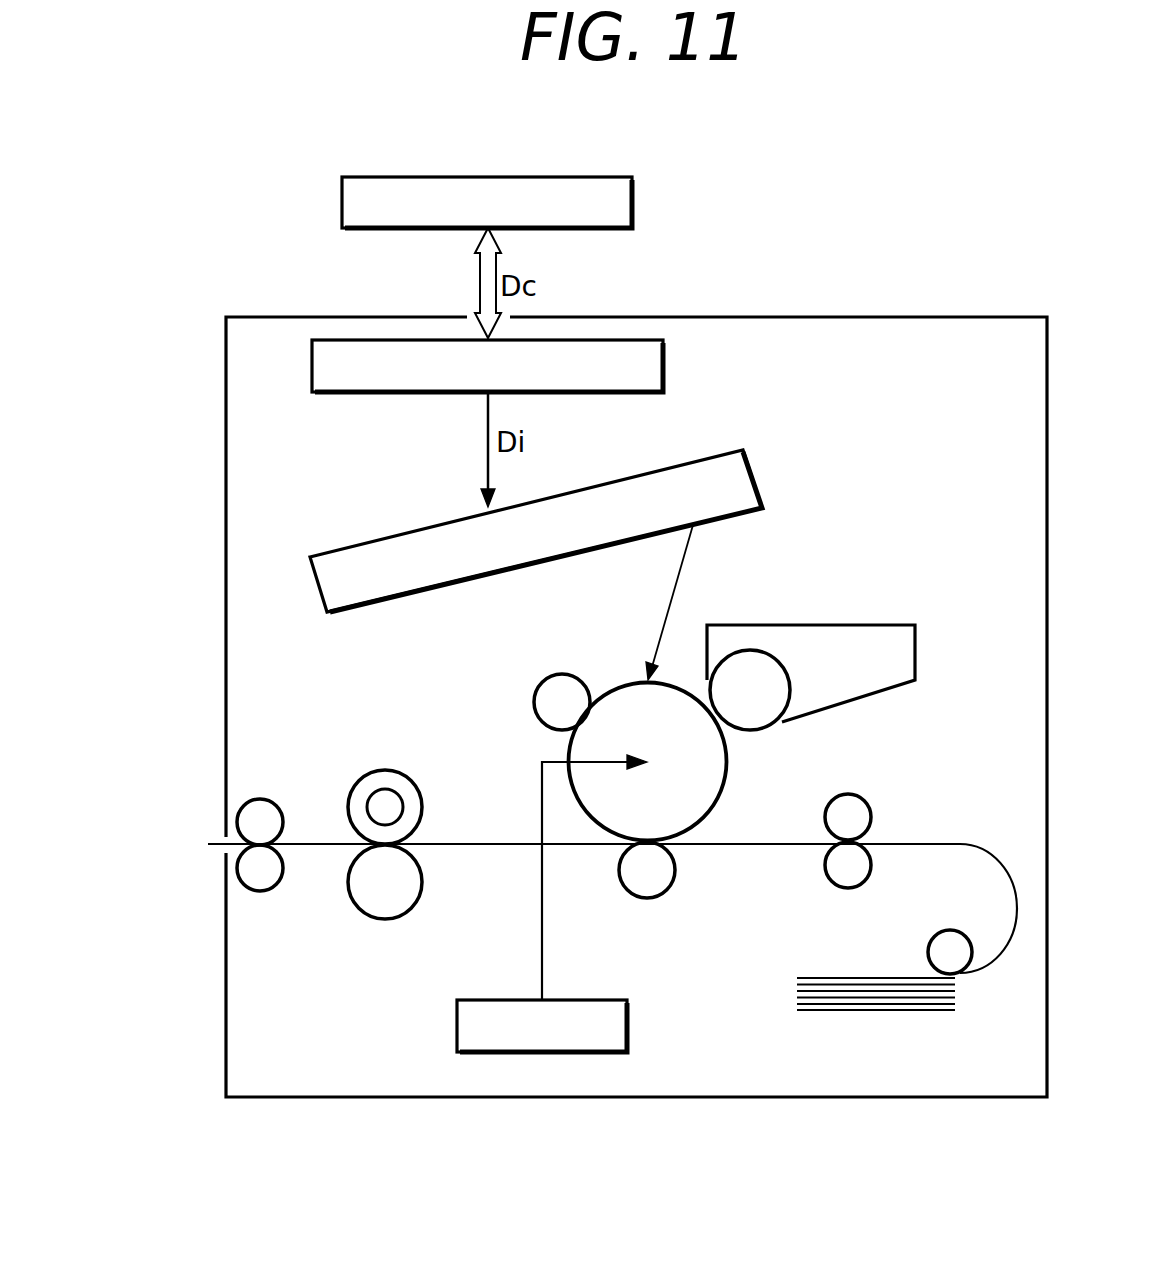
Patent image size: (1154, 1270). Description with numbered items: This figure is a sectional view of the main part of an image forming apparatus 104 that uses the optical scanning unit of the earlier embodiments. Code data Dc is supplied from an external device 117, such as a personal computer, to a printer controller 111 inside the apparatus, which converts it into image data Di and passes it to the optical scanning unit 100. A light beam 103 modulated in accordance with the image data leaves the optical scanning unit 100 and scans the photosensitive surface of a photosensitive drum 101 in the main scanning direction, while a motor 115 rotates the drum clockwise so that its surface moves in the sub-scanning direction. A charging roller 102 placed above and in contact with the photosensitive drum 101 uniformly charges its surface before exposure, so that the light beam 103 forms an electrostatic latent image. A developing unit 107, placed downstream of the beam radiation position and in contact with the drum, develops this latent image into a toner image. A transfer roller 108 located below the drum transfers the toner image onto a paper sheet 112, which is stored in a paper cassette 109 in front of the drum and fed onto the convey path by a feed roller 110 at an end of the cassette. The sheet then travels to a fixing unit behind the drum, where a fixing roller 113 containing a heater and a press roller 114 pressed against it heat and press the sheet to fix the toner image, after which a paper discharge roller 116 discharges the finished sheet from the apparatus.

The optical scanning unit 100 is at (372, 540).
The photosensitive drum 101 is at (715, 778).
The charging roller 102 is at (552, 682).
The light beam 103 is at (677, 583).
The image forming apparatus 104 is at (812, 313).
The developing unit 107 is at (842, 633).
The transfer roller 108 is at (667, 867).
The paper cassette 109 is at (873, 1010).
The feed roller 110 is at (953, 935).
The printer controller 111 is at (665, 367).
The paper sheet 112 is at (505, 840).
The fixing roller 113 is at (398, 780).
The press roller 114 is at (382, 905).
The motor 115 is at (585, 998).
The paper discharge roller 116 is at (263, 807).
The external device 117 is at (597, 172).